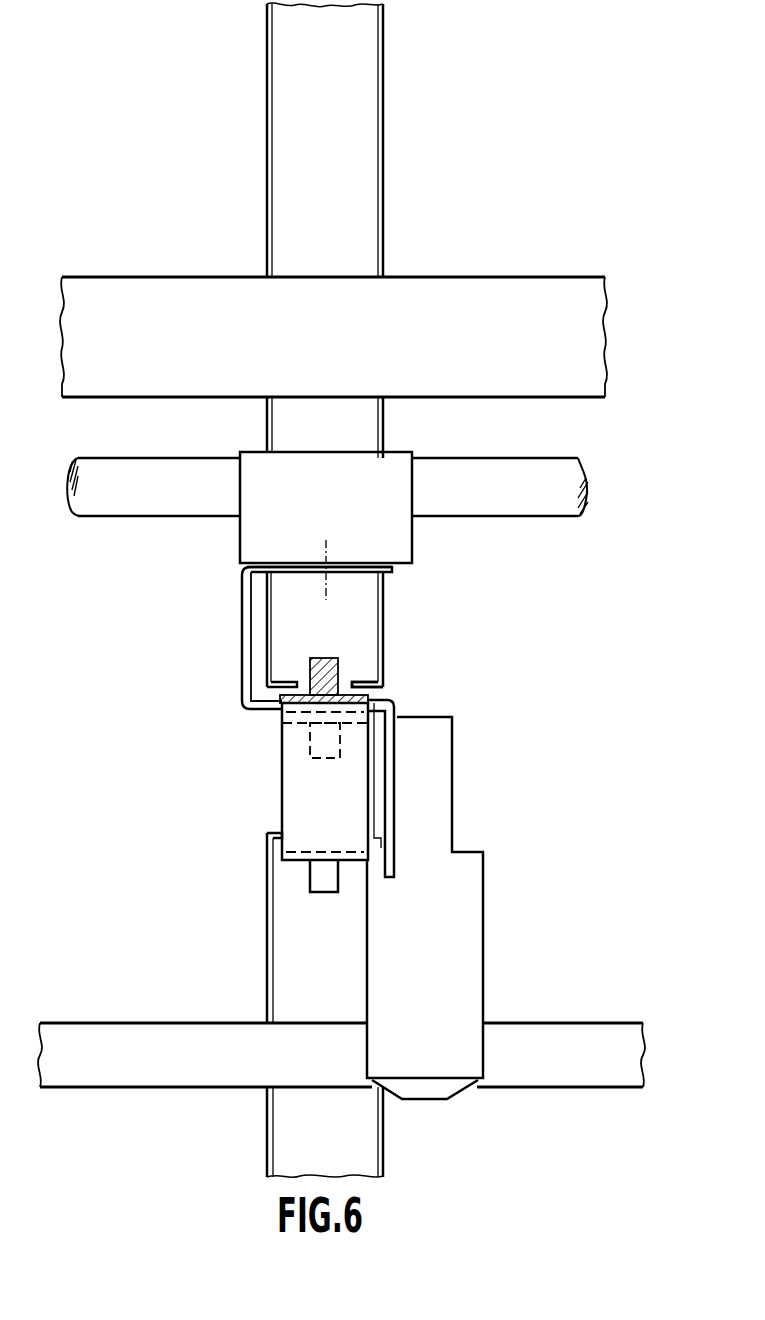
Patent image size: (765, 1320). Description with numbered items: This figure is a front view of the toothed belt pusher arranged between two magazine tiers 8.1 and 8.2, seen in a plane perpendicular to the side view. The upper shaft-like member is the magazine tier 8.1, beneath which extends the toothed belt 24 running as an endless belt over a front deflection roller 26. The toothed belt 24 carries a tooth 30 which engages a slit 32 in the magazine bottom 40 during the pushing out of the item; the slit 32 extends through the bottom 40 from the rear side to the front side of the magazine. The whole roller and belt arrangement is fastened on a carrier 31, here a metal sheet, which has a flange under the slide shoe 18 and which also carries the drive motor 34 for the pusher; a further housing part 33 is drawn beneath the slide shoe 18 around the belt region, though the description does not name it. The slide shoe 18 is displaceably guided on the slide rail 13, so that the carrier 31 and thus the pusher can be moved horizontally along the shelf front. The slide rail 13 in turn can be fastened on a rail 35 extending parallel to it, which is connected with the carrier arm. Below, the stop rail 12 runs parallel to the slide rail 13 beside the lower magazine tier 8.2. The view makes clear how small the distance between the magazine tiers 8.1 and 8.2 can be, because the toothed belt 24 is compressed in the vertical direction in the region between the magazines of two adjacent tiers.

The magazine tier 8.1 is at (368, 75).
The magazine tier 8.2 is at (285, 937).
The stop rail 12 is at (600, 1035).
The slide rail 13 is at (118, 505).
The slide shoe 18 is at (398, 547).
The toothed belt 24 is at (370, 700).
The front deflection roller 26 is at (291, 784).
The tooth 30 is at (329, 657).
The carrier 31 is at (242, 640).
The slit 32 is at (346, 679).
The cup housing 33 is at (368, 593).
The drive motor 34 is at (465, 891).
The rail 35 is at (588, 345).
The magazine bottom 40 is at (364, 680).